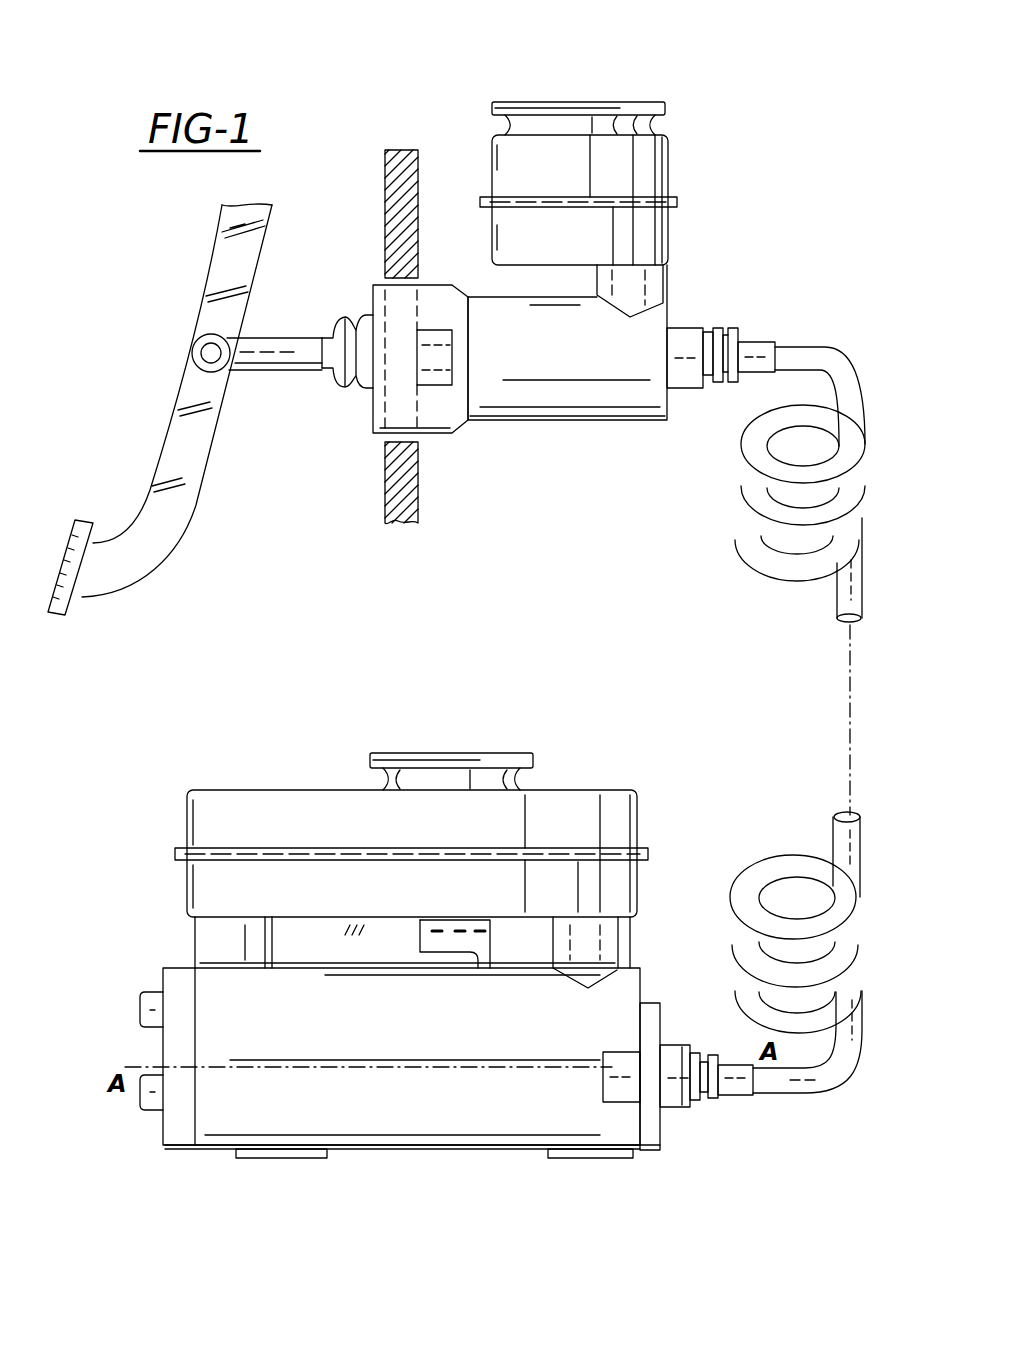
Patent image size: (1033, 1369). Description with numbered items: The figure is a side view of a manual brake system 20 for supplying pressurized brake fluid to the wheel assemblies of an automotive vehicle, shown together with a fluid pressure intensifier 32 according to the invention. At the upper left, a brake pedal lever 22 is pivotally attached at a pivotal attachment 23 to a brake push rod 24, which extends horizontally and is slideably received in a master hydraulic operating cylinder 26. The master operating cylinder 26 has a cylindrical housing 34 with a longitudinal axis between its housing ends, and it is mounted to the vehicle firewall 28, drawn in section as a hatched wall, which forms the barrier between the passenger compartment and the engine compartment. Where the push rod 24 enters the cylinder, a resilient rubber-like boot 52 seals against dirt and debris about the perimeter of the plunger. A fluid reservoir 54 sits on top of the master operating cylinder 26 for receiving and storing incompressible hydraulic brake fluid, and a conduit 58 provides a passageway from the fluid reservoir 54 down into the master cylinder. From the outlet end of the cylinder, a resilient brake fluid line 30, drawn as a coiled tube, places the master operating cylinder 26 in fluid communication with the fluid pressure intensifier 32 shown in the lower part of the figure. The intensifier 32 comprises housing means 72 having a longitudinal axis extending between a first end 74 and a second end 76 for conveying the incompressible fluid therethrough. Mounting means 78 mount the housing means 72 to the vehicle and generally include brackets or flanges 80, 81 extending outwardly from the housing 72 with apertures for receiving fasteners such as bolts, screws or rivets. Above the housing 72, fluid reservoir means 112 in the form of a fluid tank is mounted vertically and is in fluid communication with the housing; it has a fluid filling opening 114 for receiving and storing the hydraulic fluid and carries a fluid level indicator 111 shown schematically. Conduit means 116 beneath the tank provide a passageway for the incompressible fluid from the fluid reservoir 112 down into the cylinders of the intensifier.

The manual brake system 20 is at (618, 82).
The brake pedal lever 22 is at (70, 560).
The pivotal attachment 23 is at (203, 347).
The brake push rod 24 is at (281, 358).
The master hydraulic operating cylinder 26 is at (522, 428).
The vehicle firewall 28 is at (383, 490).
The resilient brake fluid line 30 is at (835, 367).
The fluid pressure intensifier 32 is at (221, 1152).
The cylindrical housing 34 is at (675, 407).
The resilient rubber-like boot 52 is at (345, 316).
The fluid reservoir 54 is at (672, 165).
The conduit 58 is at (672, 283).
The housing means 72 is at (530, 1158).
The first end 74 is at (655, 1008).
The second end 76 is at (162, 1050).
The mounting means 78 is at (598, 1158).
The flange 80 is at (643, 1150).
The flange 81 is at (325, 1158).
The fluid level indicator 111 is at (420, 932).
The fluid reservoir means 112 is at (640, 815).
The fluid filling opening 114 is at (522, 768).
The conduit means 116 is at (195, 952).